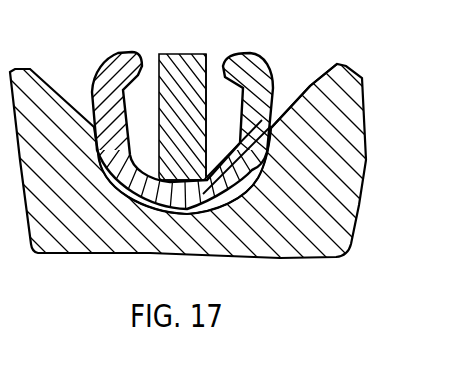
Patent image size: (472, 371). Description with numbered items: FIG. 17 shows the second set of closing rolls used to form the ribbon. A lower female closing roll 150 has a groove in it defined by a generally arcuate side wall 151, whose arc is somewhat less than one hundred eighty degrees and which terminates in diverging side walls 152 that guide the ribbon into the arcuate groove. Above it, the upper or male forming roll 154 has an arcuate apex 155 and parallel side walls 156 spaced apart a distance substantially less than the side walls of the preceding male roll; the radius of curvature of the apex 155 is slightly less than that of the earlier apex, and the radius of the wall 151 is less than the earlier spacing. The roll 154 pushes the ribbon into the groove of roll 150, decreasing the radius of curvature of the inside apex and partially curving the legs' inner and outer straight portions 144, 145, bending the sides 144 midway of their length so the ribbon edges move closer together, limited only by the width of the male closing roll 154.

The inner straight portion 144 is at (247, 173).
The outer straight portion 145 is at (258, 128).
The lower female closing roll 150 is at (318, 238).
The arcuate side wall 151 is at (231, 190).
The diverging side walls 152 is at (309, 88).
The upper male forming roll 154 is at (190, 72).
The arcuate apex 155 is at (190, 179).
The parallel side walls 156 is at (209, 118).